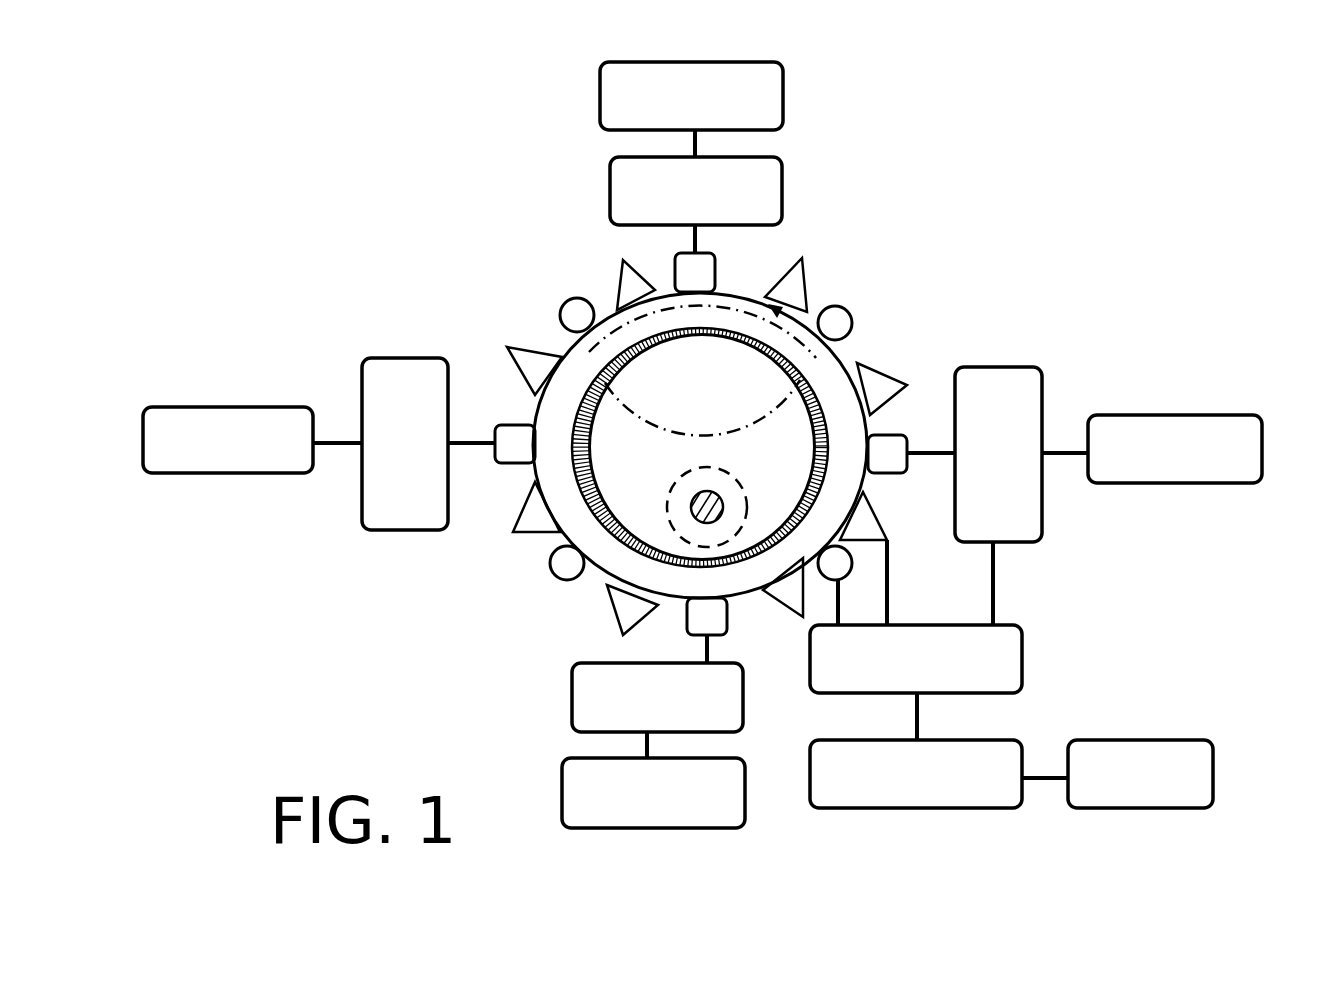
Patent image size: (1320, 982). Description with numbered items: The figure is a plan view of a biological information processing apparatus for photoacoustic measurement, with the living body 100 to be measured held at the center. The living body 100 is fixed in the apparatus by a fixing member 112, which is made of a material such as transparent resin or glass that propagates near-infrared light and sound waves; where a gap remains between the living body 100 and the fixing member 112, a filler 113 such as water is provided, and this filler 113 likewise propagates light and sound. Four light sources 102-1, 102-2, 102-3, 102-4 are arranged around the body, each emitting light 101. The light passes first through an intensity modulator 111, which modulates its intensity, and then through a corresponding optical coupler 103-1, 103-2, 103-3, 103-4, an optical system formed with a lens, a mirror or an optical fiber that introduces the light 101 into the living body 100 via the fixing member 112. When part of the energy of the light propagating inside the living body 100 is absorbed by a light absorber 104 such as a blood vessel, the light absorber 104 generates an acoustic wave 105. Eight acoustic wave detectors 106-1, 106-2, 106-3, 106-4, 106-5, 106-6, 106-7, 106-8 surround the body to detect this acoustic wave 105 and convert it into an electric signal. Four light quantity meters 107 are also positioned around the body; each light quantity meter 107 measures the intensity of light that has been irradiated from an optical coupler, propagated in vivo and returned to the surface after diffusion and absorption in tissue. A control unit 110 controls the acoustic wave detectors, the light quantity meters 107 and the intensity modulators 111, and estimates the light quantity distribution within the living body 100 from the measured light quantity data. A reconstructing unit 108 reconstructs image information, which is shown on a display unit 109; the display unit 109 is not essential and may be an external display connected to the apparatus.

The living body 100 is at (610, 427).
The light 101 is at (702, 432).
The light source 102-1 is at (691, 96).
The light source 102-2 is at (1175, 449).
The light source 102-3 is at (653, 793).
The light source 102-4 is at (228, 440).
The optical coupler 103-1 is at (725, 268).
The optical coupler 103-2 is at (903, 469).
The optical coupler 103-3 is at (678, 630).
The optical coupler 103-4 is at (500, 431).
The light absorber 104 is at (722, 487).
The acoustic wave 105 is at (668, 506).
The acoustic wave detector 106-1 is at (817, 282).
The acoustic wave detector 106-2 is at (903, 383).
The acoustic wave detector 106-3 is at (897, 558).
The acoustic wave detector 106-4 is at (770, 600).
The acoustic wave detector 106-5 is at (605, 611).
The acoustic wave detector 106-6 is at (512, 507).
The acoustic wave detector 106-7 is at (504, 363).
The acoustic wave detector 106-8 is at (603, 281).
The light quantity meter 107 is at (701, 453).
The reconstructing unit 108 is at (916, 774).
The display unit 109 is at (1140, 774).
The control unit 110 is at (916, 659).
The intensity modulator 111 is at (702, 444).
The fixing member 112 is at (576, 524).
The filler 113 is at (816, 399).